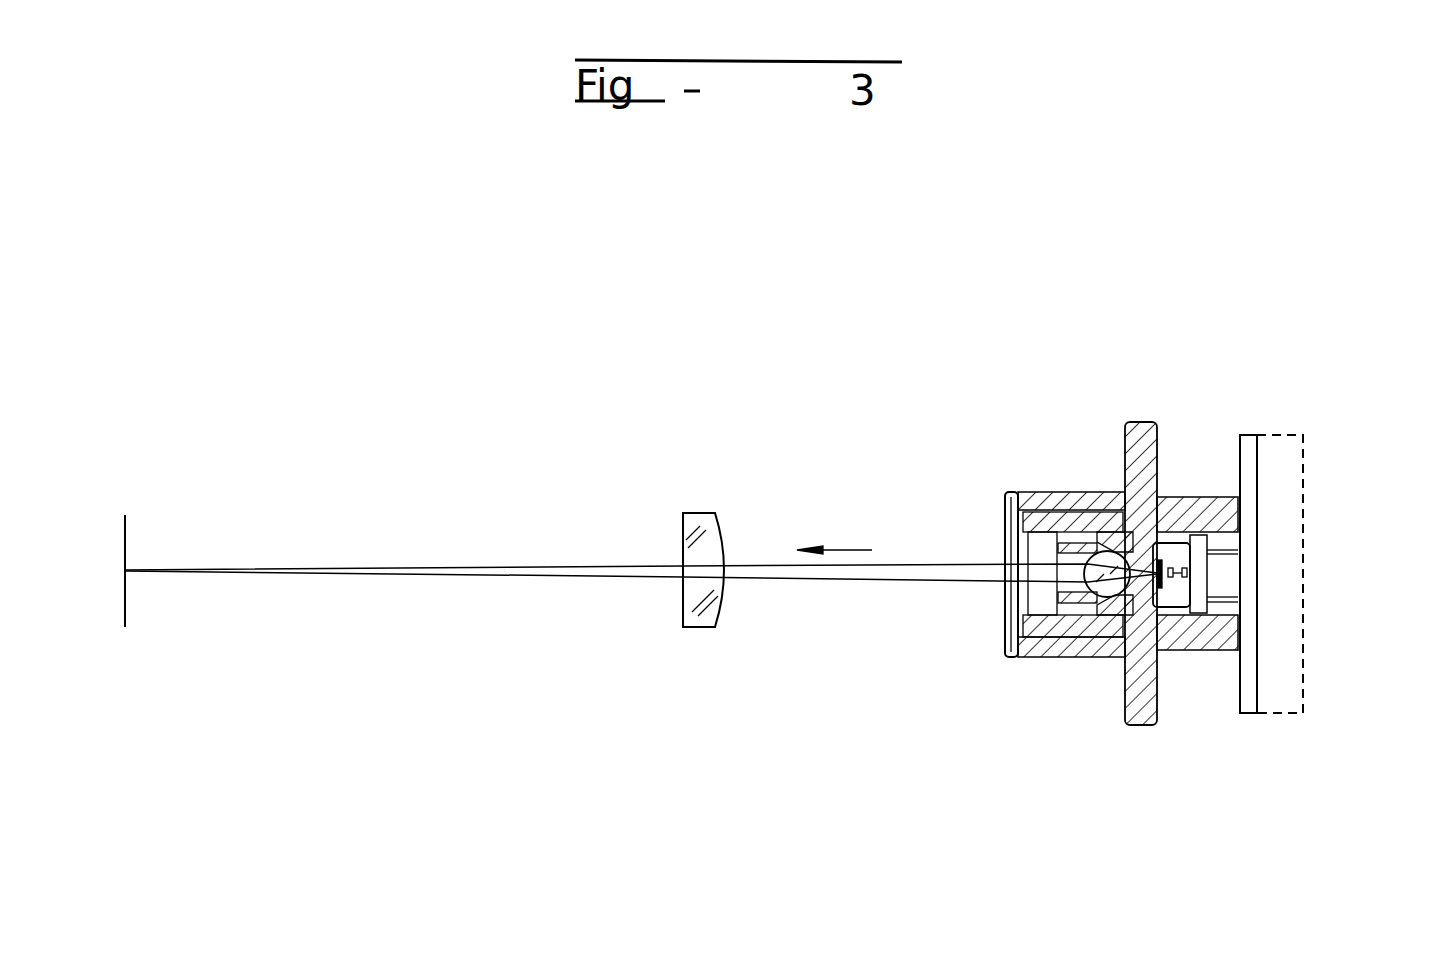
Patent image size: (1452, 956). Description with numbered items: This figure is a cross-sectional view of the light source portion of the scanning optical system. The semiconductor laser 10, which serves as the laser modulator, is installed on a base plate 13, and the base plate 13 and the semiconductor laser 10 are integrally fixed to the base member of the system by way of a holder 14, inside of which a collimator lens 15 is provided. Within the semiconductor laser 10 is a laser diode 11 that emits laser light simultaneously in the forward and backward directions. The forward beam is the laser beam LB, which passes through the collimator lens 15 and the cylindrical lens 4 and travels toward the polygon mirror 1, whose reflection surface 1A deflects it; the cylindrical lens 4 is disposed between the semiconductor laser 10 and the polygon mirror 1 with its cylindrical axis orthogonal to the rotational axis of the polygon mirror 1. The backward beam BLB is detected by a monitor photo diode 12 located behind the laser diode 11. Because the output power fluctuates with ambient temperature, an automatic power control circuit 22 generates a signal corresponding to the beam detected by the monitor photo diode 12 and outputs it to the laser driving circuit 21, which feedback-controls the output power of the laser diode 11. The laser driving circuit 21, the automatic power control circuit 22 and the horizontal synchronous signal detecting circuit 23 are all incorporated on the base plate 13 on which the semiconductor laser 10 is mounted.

The polygon mirror 1 is at (118, 470).
The reflection surface 1A is at (125, 547).
The cylindrical lens 4 is at (695, 512).
The semiconductor laser 10 is at (1172, 543).
The laser diode 11 is at (1163, 590).
The monitor photo diode 12 is at (1184, 587).
The base plate 13 is at (1250, 433).
The mounting flange 14 is at (1138, 422).
The collimator lens 15 is at (1110, 548).
The laser driving circuit 21 is at (1278, 433).
The automatic power control circuit 22 is at (1278, 433).
The horizontal synchronous signal detecting circuit 23 is at (1278, 433).
The laser beam LB is at (835, 582).
The backward laser beam BLB is at (1178, 587).